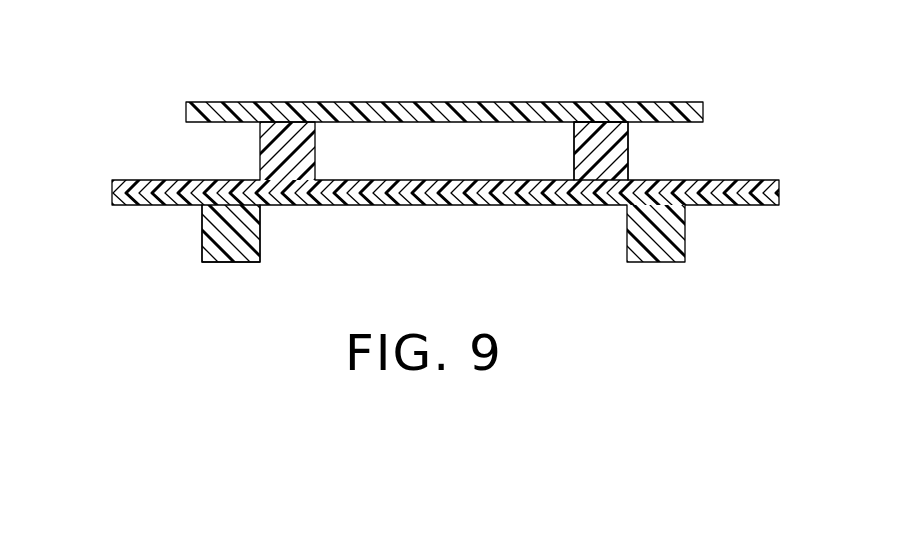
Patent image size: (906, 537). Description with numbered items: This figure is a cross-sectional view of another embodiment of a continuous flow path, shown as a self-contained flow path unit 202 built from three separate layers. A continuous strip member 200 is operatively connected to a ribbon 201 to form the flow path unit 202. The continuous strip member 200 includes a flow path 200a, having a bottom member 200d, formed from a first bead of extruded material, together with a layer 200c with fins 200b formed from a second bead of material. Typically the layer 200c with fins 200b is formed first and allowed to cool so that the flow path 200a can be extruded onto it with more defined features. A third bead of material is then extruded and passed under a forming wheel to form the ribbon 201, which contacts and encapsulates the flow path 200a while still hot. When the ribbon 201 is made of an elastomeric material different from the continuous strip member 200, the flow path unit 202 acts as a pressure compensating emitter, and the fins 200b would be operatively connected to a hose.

The self-contained flow path unit 202 is at (233, 53).
The ribbon 201 is at (357, 102).
The continuous strip member 200 is at (640, 167).
The flow path 200a is at (602, 145).
The fins 200b is at (202, 240).
The layer 200c is at (520, 205).
The bottom member 200d is at (447, 179).